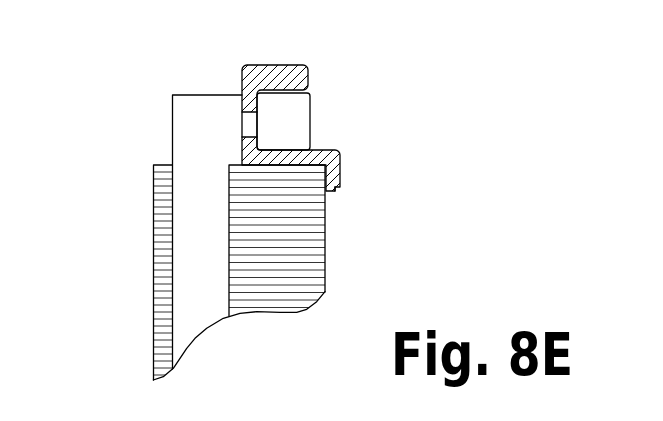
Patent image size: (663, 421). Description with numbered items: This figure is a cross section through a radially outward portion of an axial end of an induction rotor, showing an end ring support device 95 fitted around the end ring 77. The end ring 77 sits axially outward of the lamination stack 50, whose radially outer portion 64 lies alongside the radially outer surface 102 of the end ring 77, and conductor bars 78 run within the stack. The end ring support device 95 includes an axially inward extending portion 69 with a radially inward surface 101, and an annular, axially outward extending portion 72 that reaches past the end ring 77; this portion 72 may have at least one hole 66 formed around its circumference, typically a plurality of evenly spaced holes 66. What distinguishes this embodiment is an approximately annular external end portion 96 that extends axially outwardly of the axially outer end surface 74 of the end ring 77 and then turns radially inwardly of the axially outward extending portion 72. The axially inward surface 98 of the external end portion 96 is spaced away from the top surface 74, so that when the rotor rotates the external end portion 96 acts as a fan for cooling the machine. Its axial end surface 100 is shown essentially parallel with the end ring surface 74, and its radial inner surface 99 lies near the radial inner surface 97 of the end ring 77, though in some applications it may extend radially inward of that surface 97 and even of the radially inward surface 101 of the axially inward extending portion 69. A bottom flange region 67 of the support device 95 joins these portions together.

The lamination stack 50 is at (303, 270).
The radially outer portion of lamination stack 64 is at (162, 278).
The hole 66 is at (248, 125).
The bottom flange of clip 67 is at (297, 155).
The axially inward extending portion 69 is at (339, 190).
The annular axially outward extending portion 72 is at (241, 101).
The axially outer end surface of end ring 74 is at (183, 94).
The end ring 77 is at (190, 142).
The conductor bars 78 is at (197, 300).
The end ring support device 95 is at (340, 149).
The external end portion 96 is at (278, 74).
The radial inner surface of end ring 97 is at (310, 123).
The axially inward surface of external end portion 98 is at (307, 106).
The radial inner surface of external end portion 99 is at (308, 78).
The axial end surface 100 is at (262, 66).
The radially inward surface of axially inward extending portion 101 is at (341, 175).
The radially outer surface of end ring 102 is at (173, 128).